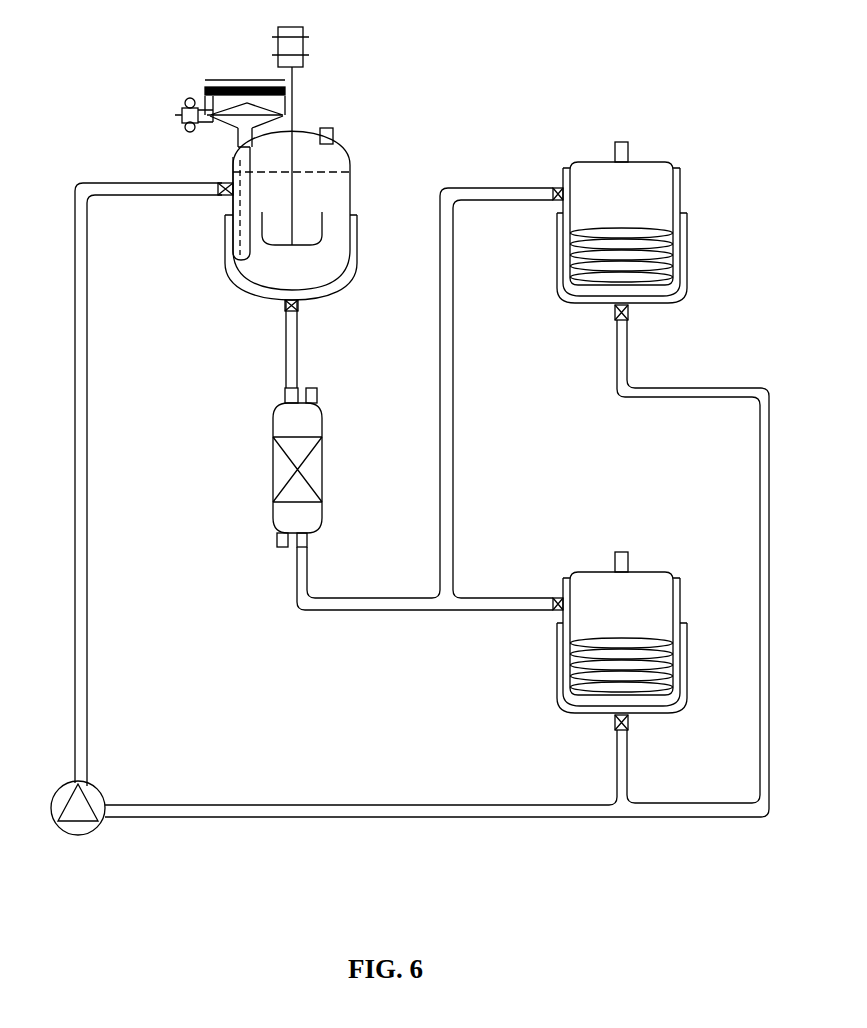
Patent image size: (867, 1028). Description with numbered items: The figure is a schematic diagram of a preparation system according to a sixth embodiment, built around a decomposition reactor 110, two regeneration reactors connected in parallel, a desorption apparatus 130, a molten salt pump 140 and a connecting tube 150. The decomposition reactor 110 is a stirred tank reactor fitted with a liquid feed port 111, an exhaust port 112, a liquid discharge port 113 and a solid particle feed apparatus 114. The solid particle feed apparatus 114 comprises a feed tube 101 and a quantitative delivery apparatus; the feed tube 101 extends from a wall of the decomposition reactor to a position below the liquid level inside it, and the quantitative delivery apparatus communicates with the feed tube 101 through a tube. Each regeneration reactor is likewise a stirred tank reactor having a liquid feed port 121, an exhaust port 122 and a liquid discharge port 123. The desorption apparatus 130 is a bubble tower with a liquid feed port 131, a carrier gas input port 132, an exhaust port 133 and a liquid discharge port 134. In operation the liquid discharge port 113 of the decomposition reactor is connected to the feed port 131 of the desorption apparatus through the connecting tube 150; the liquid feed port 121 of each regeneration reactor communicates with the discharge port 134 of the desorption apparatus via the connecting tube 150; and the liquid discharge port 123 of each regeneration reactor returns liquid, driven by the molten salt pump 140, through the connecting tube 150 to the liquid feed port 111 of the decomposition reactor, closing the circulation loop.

The feed tube 101 is at (232, 170).
The decomposition reactor 110 is at (357, 197).
The liquid feed port 111 is at (222, 197).
The exhaust port 112 is at (333, 137).
The liquid discharge port 113 is at (287, 305).
The solid particle feed apparatus 114 is at (203, 80).
The liquid feed port 121 is at (558, 200).
The exhaust port 122 is at (630, 152).
The liquid discharge port 123 is at (617, 312).
The desorption apparatus 130 is at (322, 472).
The liquid feed port 131 is at (287, 395).
The carrier gas input port 132 is at (280, 547).
The exhaust port 133 is at (316, 402).
The liquid discharge port 134 is at (308, 540).
The molten salt pump 140 is at (103, 790).
The connecting tube 150 is at (322, 805).